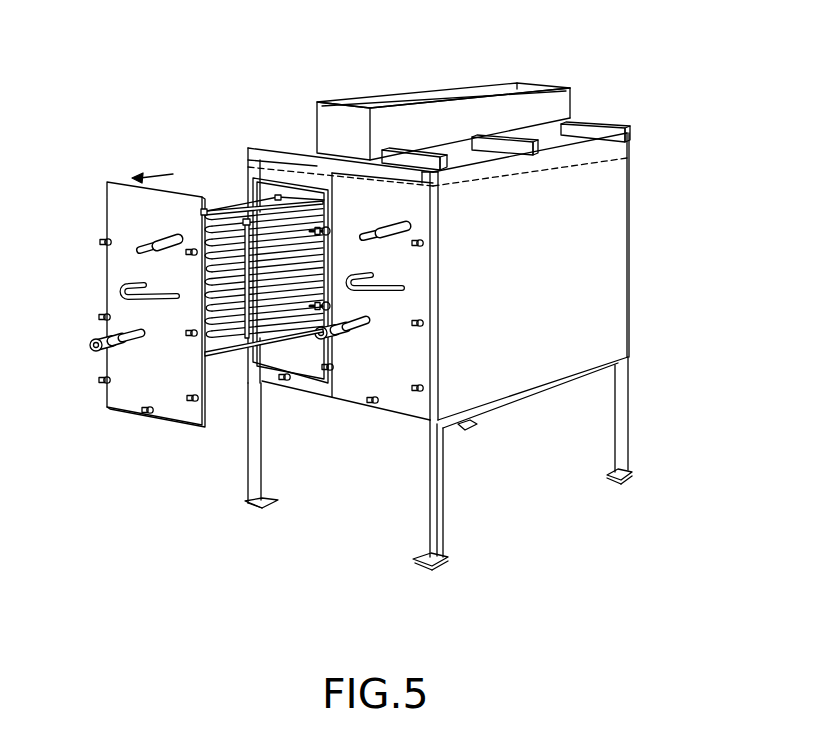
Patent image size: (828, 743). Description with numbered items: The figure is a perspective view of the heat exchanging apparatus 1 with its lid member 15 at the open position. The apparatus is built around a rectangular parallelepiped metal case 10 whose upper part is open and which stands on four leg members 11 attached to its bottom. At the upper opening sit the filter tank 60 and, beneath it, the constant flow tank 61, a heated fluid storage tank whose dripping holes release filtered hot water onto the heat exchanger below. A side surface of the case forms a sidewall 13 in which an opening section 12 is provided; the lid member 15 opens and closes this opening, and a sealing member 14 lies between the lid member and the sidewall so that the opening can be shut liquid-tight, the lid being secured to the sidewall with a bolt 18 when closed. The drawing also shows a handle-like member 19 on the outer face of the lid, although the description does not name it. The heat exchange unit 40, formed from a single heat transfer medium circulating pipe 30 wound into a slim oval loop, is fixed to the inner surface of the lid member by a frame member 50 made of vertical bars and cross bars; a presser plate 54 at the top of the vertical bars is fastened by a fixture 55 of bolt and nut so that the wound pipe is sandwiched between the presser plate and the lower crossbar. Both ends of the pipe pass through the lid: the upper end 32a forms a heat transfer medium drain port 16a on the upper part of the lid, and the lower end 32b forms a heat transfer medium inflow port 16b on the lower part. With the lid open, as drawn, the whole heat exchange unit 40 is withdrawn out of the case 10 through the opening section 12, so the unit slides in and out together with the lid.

The heat exchanging apparatus 1 is at (483, 214).
The case 10 is at (483, 280).
The leg members 11 is at (252, 452).
The opening section 12 is at (285, 230).
The sidewall 13 is at (588, 238).
The sealing member 14 is at (290, 188).
The lid member 15 is at (117, 195).
The heat transfer medium drain port 16a is at (140, 249).
The heat transfer medium inflow port 16b is at (93, 347).
The bolt 18 is at (102, 240).
The handle 19 is at (127, 297).
The heat transfer medium circulating pipe 30 is at (264, 269).
The upper end 32a is at (270, 248).
The lower end 32b is at (223, 390).
The heat exchange unit 40 is at (225, 230).
The frame member 50 is at (246, 218).
The presser plate 54 is at (203, 210).
The fixture 55 is at (208, 207).
The filter tank 60 is at (447, 84).
The constant flow tank 61 is at (573, 127).